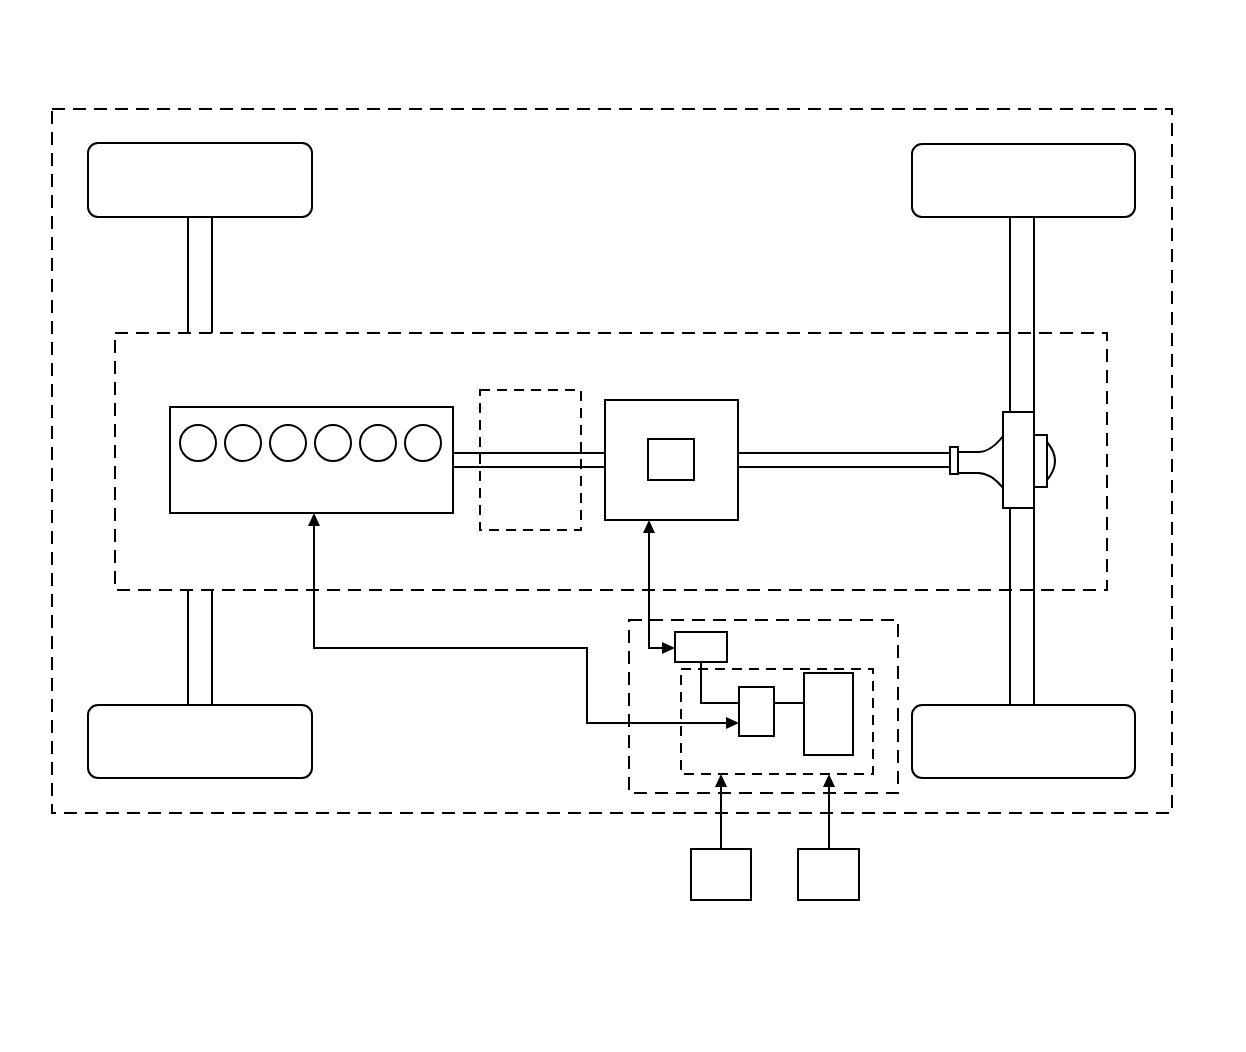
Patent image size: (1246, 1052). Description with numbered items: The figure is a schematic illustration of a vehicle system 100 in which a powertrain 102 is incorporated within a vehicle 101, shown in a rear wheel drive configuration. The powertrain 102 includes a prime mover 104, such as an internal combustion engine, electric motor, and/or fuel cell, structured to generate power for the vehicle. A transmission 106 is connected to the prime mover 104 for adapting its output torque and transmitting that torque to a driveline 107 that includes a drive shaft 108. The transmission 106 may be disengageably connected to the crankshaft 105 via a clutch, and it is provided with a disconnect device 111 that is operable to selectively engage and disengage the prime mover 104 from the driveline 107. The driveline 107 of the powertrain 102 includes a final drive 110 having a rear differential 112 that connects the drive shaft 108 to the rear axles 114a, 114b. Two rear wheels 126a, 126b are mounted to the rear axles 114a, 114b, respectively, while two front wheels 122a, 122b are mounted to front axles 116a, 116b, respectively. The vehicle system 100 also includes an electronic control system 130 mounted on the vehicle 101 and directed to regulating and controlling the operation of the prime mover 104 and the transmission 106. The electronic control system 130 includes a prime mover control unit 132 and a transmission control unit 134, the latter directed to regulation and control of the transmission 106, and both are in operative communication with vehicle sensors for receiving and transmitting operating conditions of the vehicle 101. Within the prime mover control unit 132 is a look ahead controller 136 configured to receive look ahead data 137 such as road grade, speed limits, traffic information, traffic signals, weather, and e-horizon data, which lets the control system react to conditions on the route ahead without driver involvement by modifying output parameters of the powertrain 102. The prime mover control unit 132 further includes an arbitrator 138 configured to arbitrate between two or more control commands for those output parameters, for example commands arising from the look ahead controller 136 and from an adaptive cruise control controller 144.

The vehicle system 100 is at (1146, 68).
The vehicle 101 is at (889, 104).
The powertrain 102 is at (855, 333).
The prime mover 104 is at (329, 496).
The crankshaft 105 is at (470, 468).
The transmission 106 is at (702, 521).
The driveline 107 is at (611, 425).
The drive shaft 108 is at (836, 469).
The final drive 110 is at (1050, 443).
The disconnect device 111 is at (498, 382).
The rear differential 112 is at (1027, 433).
The rear axle 114a is at (1035, 263).
The rear axle 114b is at (1035, 652).
The front axle 116a is at (212, 262).
The front axle 116b is at (212, 652).
The front wheel 122a is at (225, 194).
The front wheel 122b is at (225, 754).
The rear wheel 126a is at (1048, 194).
The rear wheel 126b is at (1048, 754).
The electronic control system 130 is at (629, 778).
The prime mover control unit 132 is at (793, 669).
The transmission control unit 134 is at (706, 632).
The look ahead controller 136 is at (848, 726).
The look ahead data 137 is at (848, 888).
The arbitrator 138 is at (750, 737).
The adaptive cruise control controller 144 is at (740, 888).